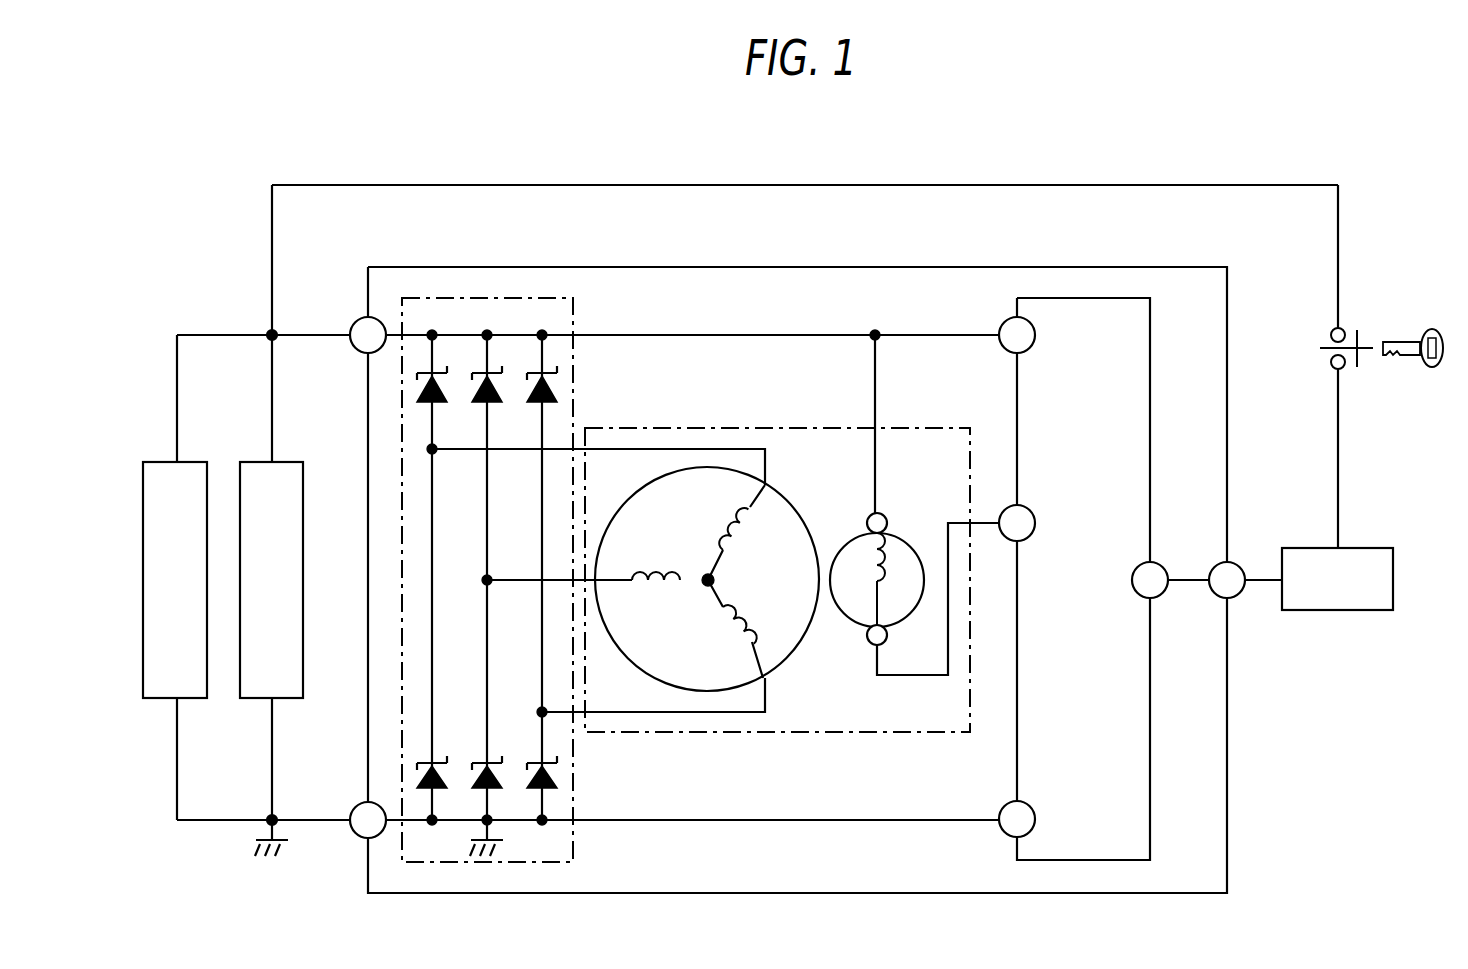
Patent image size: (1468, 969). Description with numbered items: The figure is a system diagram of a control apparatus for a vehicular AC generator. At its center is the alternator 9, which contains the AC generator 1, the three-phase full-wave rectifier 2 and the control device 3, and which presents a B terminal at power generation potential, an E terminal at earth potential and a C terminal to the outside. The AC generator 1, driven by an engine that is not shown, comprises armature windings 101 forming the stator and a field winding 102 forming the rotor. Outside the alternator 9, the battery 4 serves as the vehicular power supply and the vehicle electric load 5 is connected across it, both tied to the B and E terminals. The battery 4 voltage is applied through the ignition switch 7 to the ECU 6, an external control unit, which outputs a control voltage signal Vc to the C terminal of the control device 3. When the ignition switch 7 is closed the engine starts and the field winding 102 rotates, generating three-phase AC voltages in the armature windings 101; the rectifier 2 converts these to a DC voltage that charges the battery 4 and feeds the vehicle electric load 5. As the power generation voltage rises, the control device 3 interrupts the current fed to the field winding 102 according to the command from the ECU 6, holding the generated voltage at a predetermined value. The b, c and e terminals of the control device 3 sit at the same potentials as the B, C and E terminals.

The AC generator 1 is at (792, 531).
The three-phase full-wave rectifier 2 is at (575, 313).
The control device 3 is at (1080, 298).
The battery 4 is at (193, 457).
The vehicle electric load 5 is at (290, 457).
The ECU 6 is at (1393, 578).
The ignition switch 7 is at (1370, 362).
The alternator 9 is at (622, 267).
The armature windings 101 is at (730, 640).
The field winding 102 is at (862, 622).